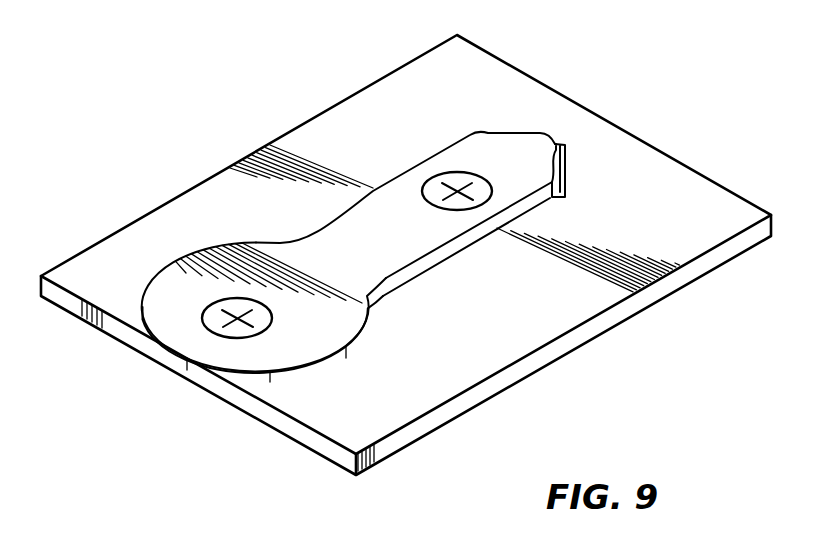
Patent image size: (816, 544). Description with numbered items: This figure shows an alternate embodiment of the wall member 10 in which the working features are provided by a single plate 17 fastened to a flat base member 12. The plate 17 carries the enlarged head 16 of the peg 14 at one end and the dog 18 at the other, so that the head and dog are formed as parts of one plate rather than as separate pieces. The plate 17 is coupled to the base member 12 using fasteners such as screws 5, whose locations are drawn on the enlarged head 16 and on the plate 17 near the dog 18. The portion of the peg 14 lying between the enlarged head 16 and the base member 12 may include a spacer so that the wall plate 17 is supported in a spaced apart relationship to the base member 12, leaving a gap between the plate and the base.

The wall member 10 is at (483, 77).
The base member 12 is at (706, 203).
The peg 14 is at (175, 296).
The enlarged head 16 is at (318, 340).
The plate 17 is at (400, 204).
The dog 18 is at (567, 160).
The screws 5 is at (233, 300).